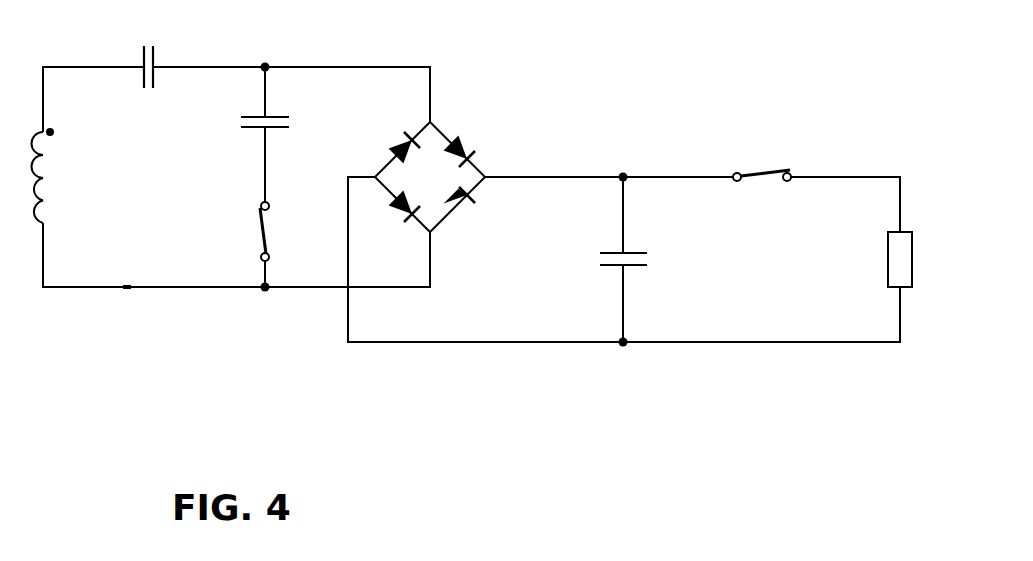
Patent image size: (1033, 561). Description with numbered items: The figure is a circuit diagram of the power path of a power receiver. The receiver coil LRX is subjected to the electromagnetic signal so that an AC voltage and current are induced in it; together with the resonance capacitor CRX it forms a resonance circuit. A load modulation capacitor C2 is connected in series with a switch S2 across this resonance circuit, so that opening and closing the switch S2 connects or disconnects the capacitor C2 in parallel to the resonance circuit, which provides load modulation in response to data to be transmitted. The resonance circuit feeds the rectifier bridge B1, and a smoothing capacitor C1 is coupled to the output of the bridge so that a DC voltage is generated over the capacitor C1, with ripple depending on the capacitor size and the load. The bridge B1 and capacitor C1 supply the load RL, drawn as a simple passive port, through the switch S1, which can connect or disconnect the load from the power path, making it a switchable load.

The resonance capacitor CRX is at (156, 54).
The receiver coil LRX is at (62, 177).
The load modulation capacitor C2 is at (279, 120).
The switch S2 is at (280, 231).
The rectifier bridge B1 is at (437, 165).
The switch S1 is at (762, 150).
The smoothing capacitor C1 is at (639, 261).
The load RL is at (916, 259).